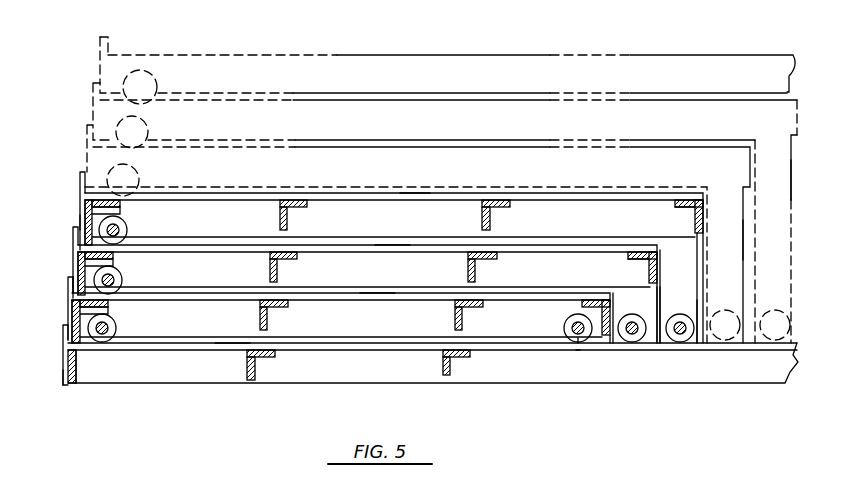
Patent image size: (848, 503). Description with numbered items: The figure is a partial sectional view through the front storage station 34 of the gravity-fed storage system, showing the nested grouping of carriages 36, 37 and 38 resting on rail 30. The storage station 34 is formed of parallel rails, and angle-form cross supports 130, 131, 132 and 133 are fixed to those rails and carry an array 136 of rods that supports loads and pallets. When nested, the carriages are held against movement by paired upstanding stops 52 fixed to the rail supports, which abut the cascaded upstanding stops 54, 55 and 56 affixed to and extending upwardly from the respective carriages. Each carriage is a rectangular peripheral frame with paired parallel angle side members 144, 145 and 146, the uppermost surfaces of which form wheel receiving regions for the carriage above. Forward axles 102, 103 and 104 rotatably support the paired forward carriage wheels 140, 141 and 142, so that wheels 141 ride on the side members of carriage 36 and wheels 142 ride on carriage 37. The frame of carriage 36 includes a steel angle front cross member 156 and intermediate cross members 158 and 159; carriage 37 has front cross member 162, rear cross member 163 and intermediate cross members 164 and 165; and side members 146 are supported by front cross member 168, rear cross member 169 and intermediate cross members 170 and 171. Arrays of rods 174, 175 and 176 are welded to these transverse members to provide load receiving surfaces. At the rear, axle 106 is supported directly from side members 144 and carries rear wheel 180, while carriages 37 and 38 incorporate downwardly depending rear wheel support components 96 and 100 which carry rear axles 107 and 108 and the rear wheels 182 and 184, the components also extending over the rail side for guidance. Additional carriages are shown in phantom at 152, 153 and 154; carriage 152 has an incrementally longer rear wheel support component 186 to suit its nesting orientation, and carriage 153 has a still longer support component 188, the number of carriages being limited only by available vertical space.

The rail 30 is at (368, 363).
The front storage station 34 is at (54, 383).
The carriage 36 is at (50, 335).
The carriage 37 is at (55, 286).
The carriage 38 is at (60, 222).
The upstanding stop 52 is at (63, 352).
The upstanding stop 54 is at (68, 292).
The upstanding stop 55 is at (73, 240).
The upstanding stop 56 is at (80, 182).
The rear wheel support component 96 is at (652, 290).
The rear wheel support component 100 is at (664, 290).
The forward axle 102 is at (73, 322).
The forward axle 103 is at (78, 272).
The forward axle 104 is at (85, 220).
The rearward axle 106 is at (574, 351).
The rearward axle 107 is at (637, 343).
The rearward axle 108 is at (681, 343).
The angle-form cross support 130 is at (80, 370).
The angle-form cross support 131 is at (251, 381).
The angle-form cross support 132 is at (452, 376).
The angle-form cross support 133 is at (578, 343).
The rod array 136 is at (232, 354).
The forward carriage wheel 140 is at (116, 330).
The forward carriage wheel 141 is at (122, 280).
The forward carriage wheel 142 is at (127, 228).
The side member 144 is at (415, 330).
The side member 145 is at (412, 280).
The side member 146 is at (452, 227).
The phantom carriage 152 is at (455, 172).
The phantom carriage 153 is at (569, 120).
The phantom carriage 154 is at (690, 65).
The front cross member 156 is at (135, 315).
The intermediate cross member 158 is at (282, 320).
The intermediate cross member 159 is at (462, 315).
The front cross member 162 is at (148, 264).
The rear cross member 163 is at (630, 258).
The intermediate cross member 164 is at (277, 268).
The intermediate cross member 165 is at (490, 262).
The front cross member 168 is at (150, 213).
The rear cross member 169 is at (685, 207).
The intermediate cross member 170 is at (290, 216).
The intermediate cross member 171 is at (503, 212).
The rod array 174 is at (379, 292).
The rod array 175 is at (392, 243).
The rod array 176 is at (414, 192).
The rear wheel 180 is at (573, 340).
The rear wheel 182 is at (630, 343).
The rear wheel 184 is at (700, 370).
The rear wheel support component 186 is at (727, 235).
The rear wheel support component 188 is at (777, 165).